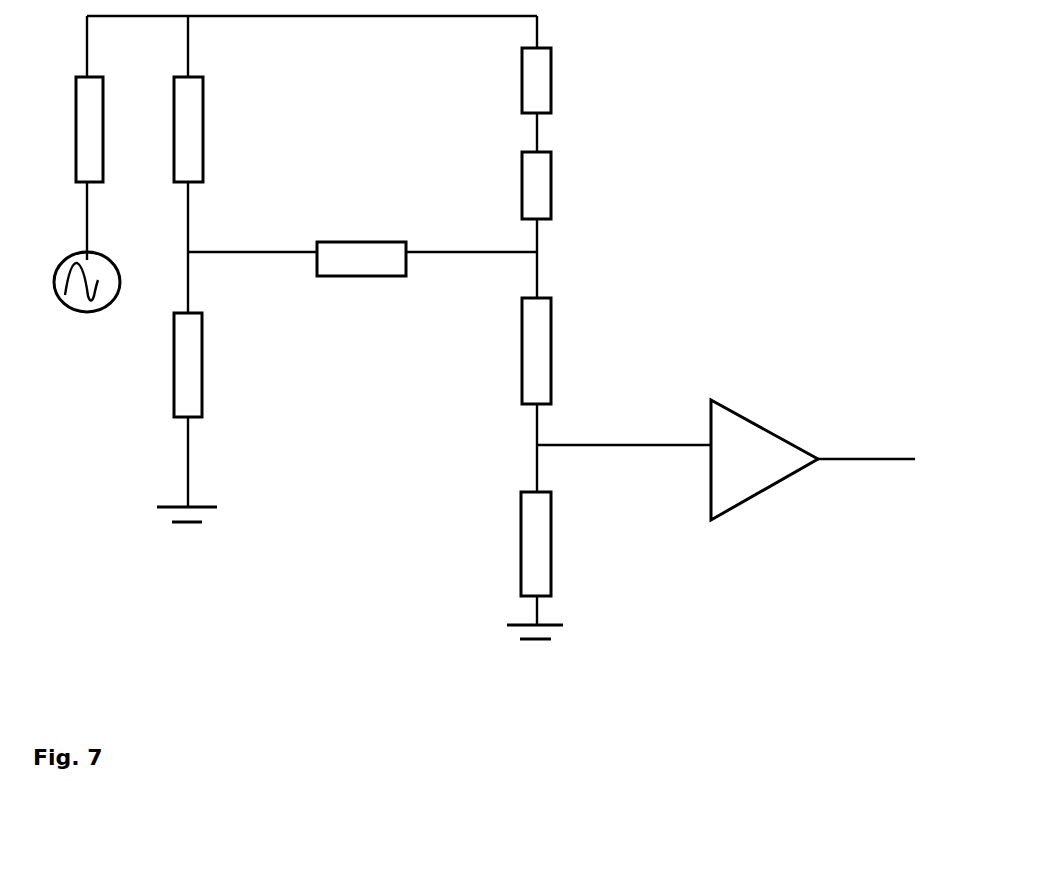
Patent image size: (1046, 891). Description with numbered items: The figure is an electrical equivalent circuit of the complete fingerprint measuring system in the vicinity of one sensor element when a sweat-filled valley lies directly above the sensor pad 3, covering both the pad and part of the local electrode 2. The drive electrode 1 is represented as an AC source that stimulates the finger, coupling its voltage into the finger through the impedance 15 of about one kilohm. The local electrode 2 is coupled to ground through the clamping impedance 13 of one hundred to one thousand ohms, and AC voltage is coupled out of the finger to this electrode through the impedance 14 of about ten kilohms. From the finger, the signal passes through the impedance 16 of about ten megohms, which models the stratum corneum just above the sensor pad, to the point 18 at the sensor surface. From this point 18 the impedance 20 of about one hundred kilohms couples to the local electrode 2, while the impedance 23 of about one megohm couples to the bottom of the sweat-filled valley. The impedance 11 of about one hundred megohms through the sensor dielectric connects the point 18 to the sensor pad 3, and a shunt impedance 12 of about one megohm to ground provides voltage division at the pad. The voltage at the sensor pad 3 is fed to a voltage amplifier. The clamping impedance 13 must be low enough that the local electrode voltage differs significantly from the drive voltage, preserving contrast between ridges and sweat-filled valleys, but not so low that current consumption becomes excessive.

The drive electrode 1 is at (81, 294).
The local electrode 2 is at (252, 237).
The sensor pad 3 is at (610, 442).
The impedance through the sensor dielectric 11 is at (594, 395).
The shunt impedance 12 is at (574, 565).
The clamping impedance 13 is at (217, 417).
The impedance coupling AC voltage out of the finger 14 is at (221, 195).
The impedance coupling AC voltage into the finger 15 is at (68, 168).
The impedance through the stratum corneum 16 is at (520, 100).
The point at the sensor surface 18 is at (495, 258).
The impedance to the local electrode 20 is at (361, 252).
The impedance to the bottom of the sweat-filled valley 23 is at (595, 185).